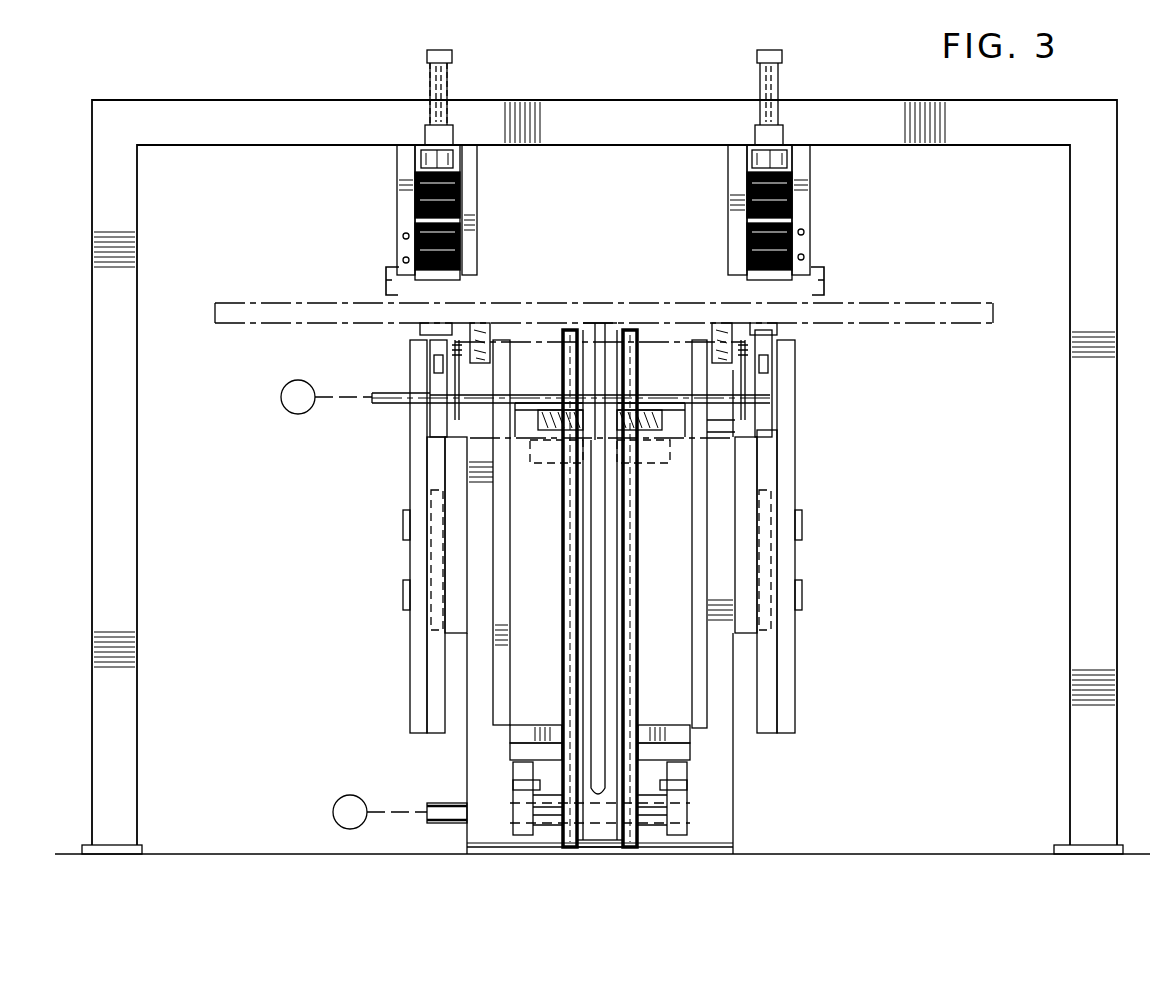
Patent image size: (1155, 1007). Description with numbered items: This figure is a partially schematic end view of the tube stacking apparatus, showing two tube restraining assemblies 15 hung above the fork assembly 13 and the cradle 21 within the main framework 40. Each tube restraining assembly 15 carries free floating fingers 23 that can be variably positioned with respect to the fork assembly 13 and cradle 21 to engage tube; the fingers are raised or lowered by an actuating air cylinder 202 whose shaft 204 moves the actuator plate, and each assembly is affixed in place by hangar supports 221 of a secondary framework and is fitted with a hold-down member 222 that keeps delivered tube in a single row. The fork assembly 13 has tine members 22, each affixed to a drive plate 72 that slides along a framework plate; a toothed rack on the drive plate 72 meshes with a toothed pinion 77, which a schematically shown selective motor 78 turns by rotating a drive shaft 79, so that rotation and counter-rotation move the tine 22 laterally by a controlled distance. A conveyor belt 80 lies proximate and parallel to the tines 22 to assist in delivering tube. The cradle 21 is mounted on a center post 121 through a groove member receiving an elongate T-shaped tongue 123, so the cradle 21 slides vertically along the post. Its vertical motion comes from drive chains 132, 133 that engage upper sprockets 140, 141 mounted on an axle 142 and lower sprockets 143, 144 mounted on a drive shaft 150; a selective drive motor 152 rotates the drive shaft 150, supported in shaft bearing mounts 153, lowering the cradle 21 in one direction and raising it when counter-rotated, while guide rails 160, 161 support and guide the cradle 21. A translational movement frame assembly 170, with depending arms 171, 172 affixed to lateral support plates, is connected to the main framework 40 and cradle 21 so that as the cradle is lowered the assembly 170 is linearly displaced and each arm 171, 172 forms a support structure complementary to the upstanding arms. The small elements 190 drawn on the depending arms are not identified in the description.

The fork assembly 13 is at (382, 339).
The tube restraining assembly 15 is at (380, 195).
The cradle 21 is at (717, 425).
The tine member 22 is at (765, 333).
The free floating finger 23 is at (462, 181).
The main framework 40 is at (762, 799).
The drive plate 72 is at (440, 360).
The toothed pinion 77 is at (437, 418).
The motor 78 is at (282, 401).
The drive shaft 79 is at (392, 405).
The first conveyor belt 80 is at (727, 333).
The center post 121 is at (612, 623).
The tongue 123 is at (598, 557).
The drive chain 132 is at (635, 660).
The drive chain 133 is at (560, 660).
The upper sprocket 140 is at (683, 418).
The upper sprocket 141 is at (533, 412).
The axle 142 is at (613, 345).
The lower sprocket 143 is at (690, 838).
The lower sprocket 144 is at (560, 850).
The drive shaft 150 is at (520, 790).
The selective drive motor 152 is at (333, 802).
The shaft bearing mount 153 is at (545, 805).
The guide rail 160 is at (697, 707).
The guide rail 161 is at (495, 710).
The translational movement frame assembly 170 is at (395, 568).
The depending arm 171 is at (780, 725).
The depending arm 172 is at (415, 665).
The guide element 190 is at (403, 532).
The actuating air cylinder 202 is at (445, 90).
The shaft 204 is at (432, 158).
The hangar support 221 is at (470, 233).
The hold-down member 222 is at (878, 240).